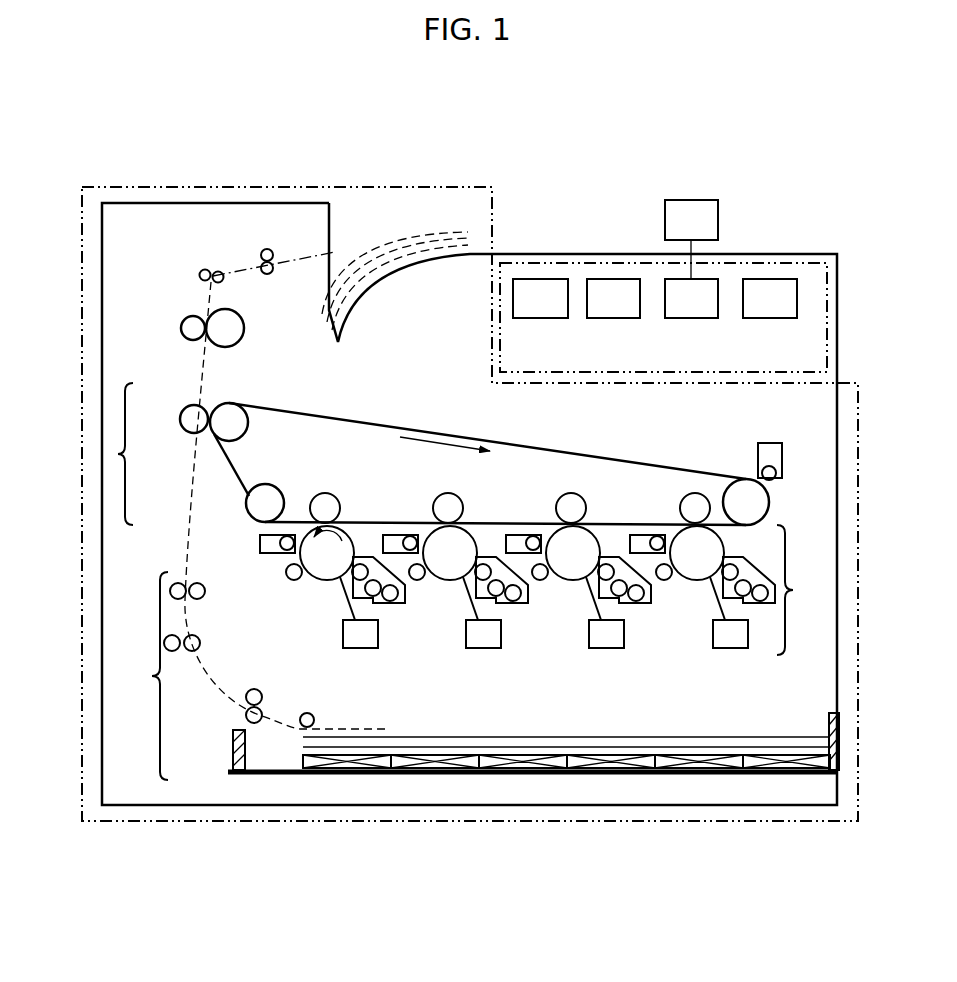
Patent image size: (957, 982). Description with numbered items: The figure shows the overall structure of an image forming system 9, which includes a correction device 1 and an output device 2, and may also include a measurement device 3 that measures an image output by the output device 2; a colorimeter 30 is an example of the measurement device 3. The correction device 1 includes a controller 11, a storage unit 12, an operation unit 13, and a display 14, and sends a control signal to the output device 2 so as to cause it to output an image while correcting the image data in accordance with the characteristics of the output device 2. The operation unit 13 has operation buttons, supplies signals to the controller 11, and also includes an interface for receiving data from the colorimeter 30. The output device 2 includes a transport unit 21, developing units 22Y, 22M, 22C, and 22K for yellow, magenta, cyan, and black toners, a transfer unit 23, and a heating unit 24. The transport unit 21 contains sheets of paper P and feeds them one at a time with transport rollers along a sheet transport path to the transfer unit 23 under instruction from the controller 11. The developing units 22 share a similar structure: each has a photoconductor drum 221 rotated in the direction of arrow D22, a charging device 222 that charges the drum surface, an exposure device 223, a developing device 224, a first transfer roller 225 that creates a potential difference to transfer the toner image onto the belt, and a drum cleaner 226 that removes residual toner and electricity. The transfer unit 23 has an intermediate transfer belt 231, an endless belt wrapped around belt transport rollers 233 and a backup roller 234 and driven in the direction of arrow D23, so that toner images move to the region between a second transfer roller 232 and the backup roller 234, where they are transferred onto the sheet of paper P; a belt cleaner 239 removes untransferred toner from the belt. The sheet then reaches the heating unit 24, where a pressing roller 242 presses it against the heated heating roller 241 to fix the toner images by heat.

The image forming system 9 is at (835, 240).
The output device 2 is at (845, 383).
The correction device 1 is at (790, 262).
The measurement device 3 is at (649, 220).
The colorimeter 30 is at (665, 230).
The controller 11 is at (555, 319).
The storage unit 12 is at (617, 319).
The operation unit 13 is at (698, 319).
The display 14 is at (773, 319).
The transport unit 21 is at (255, 248).
The heating unit 24 is at (197, 270).
The heating roller 241 is at (243, 329).
The pressing roller 242 is at (181, 330).
The transfer unit 23 is at (118, 445).
The intermediate transfer belt 231 is at (583, 452).
The second transfer roller 232 is at (190, 410).
The belt transport rollers 233 is at (247, 498).
The backup roller 234 is at (222, 405).
The belt cleaner 239 is at (775, 443).
The belt rotation direction arrow D23 is at (445, 453).
The developing units 22 is at (545, 579).
The black developing unit 22K is at (336, 579).
The cyan developing unit 22C is at (447, 638).
The magenta developing unit 22M is at (567, 638).
The yellow developing unit 22Y is at (688, 636).
The photoconductor drum 221 is at (322, 582).
The charging device 222 is at (291, 581).
The exposure device 223 is at (350, 649).
The developing device 224 is at (393, 604).
The first transfer roller 225 is at (330, 494).
The drum cleaner 226 is at (290, 536).
The drum rotation direction arrow D22 is at (327, 548).
The sheet of paper P is at (760, 735).